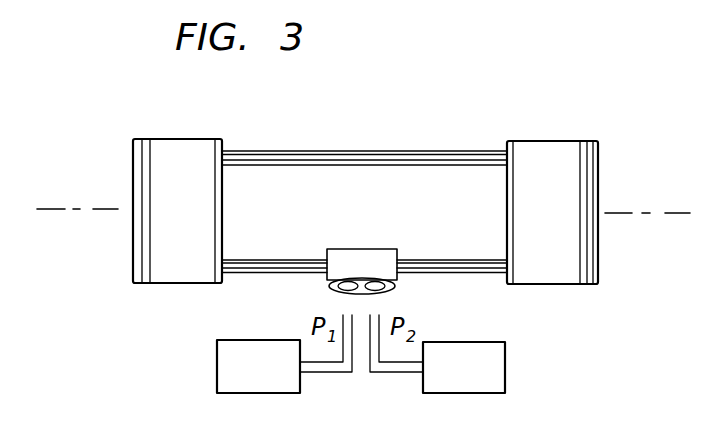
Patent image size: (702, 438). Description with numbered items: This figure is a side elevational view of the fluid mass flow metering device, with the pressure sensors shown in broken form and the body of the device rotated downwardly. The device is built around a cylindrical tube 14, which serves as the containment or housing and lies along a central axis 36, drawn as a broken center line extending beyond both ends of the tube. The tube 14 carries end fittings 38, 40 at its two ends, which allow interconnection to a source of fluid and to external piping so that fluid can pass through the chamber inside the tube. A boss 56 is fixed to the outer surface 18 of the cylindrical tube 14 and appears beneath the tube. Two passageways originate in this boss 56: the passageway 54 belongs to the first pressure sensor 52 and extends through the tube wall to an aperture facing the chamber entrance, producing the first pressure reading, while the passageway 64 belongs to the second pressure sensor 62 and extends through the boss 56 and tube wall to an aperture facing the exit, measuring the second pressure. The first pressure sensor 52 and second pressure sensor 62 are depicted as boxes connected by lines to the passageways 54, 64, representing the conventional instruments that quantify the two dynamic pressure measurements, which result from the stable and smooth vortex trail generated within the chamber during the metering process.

The cylindrical tube 14 is at (273, 180).
The outer surface 18 is at (433, 185).
The central axis 36 is at (55, 208).
The end fitting 38 is at (162, 275).
The end fitting 40 is at (563, 157).
The first pressure sensor 52 is at (227, 377).
The passageway 54 is at (330, 292).
The boss 56 is at (357, 257).
The second pressure sensor 62 is at (493, 380).
The passageway 64 is at (400, 287).